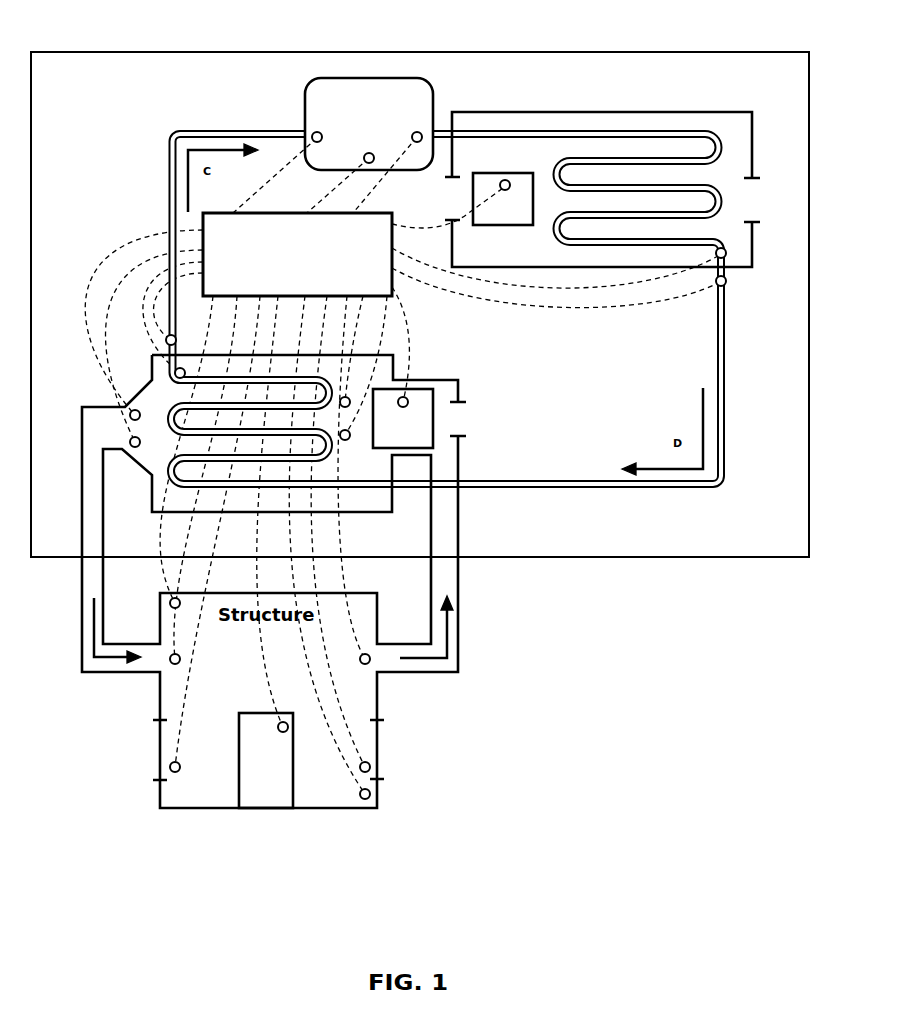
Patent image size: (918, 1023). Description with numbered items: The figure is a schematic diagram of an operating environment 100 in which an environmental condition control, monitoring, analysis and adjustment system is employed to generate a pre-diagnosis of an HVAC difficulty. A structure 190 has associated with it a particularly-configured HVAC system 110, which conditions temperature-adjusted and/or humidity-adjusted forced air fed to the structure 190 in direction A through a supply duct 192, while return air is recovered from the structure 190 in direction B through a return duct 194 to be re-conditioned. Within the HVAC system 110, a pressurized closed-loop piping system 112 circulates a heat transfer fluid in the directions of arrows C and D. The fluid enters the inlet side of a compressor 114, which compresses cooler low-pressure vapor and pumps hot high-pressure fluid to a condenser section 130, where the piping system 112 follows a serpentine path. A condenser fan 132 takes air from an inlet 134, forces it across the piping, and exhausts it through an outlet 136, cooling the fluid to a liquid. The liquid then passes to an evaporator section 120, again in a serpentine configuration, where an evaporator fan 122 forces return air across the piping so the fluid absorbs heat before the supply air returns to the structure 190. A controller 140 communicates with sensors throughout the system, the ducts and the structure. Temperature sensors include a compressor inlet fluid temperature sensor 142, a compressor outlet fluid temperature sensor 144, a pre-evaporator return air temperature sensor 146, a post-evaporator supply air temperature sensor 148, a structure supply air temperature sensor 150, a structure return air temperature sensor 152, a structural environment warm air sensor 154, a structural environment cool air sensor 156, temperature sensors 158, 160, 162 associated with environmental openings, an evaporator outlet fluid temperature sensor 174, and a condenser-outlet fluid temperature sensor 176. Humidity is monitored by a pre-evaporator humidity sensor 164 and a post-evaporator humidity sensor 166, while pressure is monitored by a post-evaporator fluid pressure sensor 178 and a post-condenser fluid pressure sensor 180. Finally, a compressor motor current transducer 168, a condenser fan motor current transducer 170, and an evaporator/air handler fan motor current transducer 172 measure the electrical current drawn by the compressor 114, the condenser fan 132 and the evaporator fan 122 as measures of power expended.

The operating environment 100 is at (100, 23).
The HVAC system 110 is at (420, 304).
The pressurized closed-loop piping system 112 is at (168, 205).
The compressor 114 is at (369, 124).
The evaporator section 120 is at (452, 378).
The evaporator fan 122 is at (433, 423).
The condenser section 130 is at (581, 268).
The condenser fan 132 is at (505, 224).
The inlet 134 is at (434, 198).
The outlet 136 is at (765, 200).
The controller 140 is at (401, 465).
The compressor inlet fluid temperature sensor 142 is at (311, 132).
The compressor outlet fluid temperature sensor 144 is at (421, 134).
The pre-evaporator return air temperature sensor 146 is at (350, 399).
The post-evaporator supply air temperature sensor 148 is at (131, 412).
The structure supply air temperature sensor 150 is at (172, 662).
The structure return air temperature sensor 152 is at (395, 680).
The structural environment warm air sensor 154 is at (172, 606).
The structural environment cool air sensor 156 is at (372, 794).
The temperature sensor 158 is at (373, 765).
The temperature sensor 160 is at (297, 747).
The temperature sensor 162 is at (170, 767).
The pre-evaporator humidity sensor 164 is at (346, 440).
The post-evaporator humidity sensor 166 is at (130, 442).
The compressor motor current transducer 168 is at (364, 161).
The condenser fan motor current transducer 170 is at (503, 181).
The evaporator/air handler fan motor current transducer 172 is at (409, 404).
The evaporator outlet fluid temperature sensor 174 is at (176, 371).
The condenser-outlet fluid temperature sensor 176 is at (725, 258).
The post-evaporator fluid pressure sensor 178 is at (167, 338).
The post-condenser fluid pressure sensor 180 is at (717, 285).
The structure 190 is at (240, 760).
The supply duct 192 is at (82, 612).
The return duct 194 is at (460, 614).